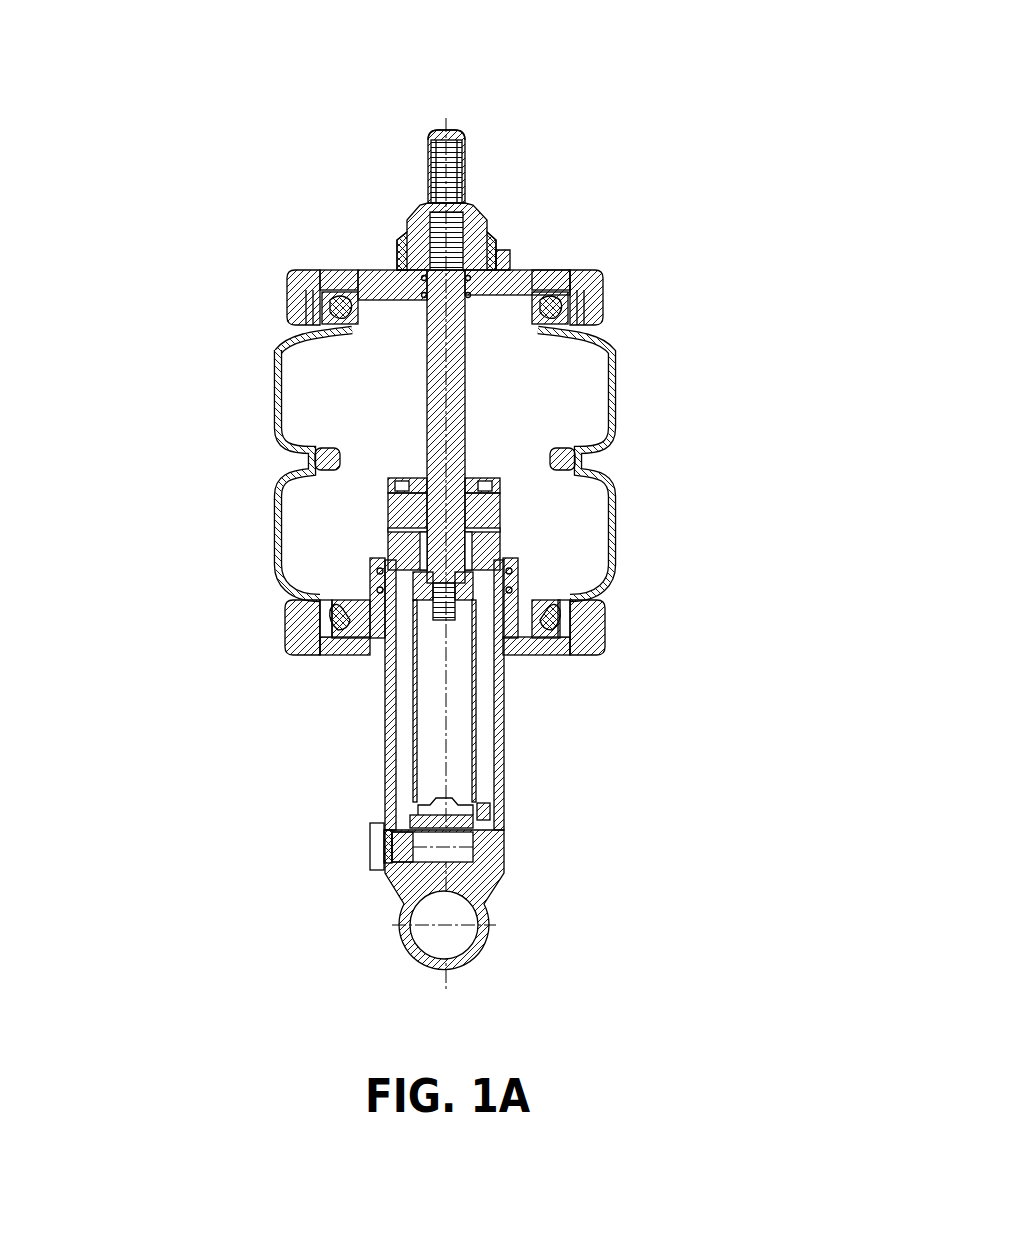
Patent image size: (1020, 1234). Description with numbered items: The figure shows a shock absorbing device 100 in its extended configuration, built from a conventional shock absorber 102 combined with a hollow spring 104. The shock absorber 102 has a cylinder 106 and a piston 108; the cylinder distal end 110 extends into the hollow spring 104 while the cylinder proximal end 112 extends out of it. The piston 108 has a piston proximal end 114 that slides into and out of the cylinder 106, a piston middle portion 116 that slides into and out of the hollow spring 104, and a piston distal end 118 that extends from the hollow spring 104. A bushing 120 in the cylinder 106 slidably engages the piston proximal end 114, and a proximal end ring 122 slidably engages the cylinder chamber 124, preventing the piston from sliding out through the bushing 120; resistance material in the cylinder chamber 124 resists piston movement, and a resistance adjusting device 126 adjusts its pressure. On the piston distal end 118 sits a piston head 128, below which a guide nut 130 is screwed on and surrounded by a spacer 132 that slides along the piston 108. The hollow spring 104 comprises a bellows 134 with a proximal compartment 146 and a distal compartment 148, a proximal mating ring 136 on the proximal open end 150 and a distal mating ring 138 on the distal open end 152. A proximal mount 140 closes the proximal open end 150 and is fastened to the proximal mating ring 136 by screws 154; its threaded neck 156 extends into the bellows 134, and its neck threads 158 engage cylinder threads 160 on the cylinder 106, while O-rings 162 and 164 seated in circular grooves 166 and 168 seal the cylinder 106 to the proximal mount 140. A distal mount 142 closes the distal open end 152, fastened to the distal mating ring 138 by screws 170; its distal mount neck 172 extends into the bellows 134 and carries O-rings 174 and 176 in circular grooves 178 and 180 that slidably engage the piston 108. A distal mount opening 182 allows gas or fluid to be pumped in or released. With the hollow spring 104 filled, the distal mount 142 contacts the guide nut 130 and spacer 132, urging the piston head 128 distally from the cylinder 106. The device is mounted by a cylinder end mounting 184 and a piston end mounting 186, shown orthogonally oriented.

The shock absorbing device 100 is at (528, 100).
The shock absorber 102 is at (498, 510).
The hollow spring 104 is at (617, 355).
The cylinder 106 is at (505, 752).
The piston 108 is at (603, 325).
The cylinder distal end 110 is at (480, 523).
The cylinder proximal end 112 is at (487, 815).
The piston proximal end 114 is at (440, 515).
The piston middle portion 116 is at (466, 425).
The piston distal end 118 is at (452, 230).
The bushing 120 is at (437, 507).
The proximal end ring 122 is at (380, 589).
The cylinder chamber 124 is at (415, 725).
The resistance adjusting device 126 is at (380, 850).
The piston head 128 is at (410, 223).
The guide nut 130 is at (368, 270).
The spacer 132 is at (494, 247).
The bellows 134 is at (272, 408).
The proximal mating ring 136 is at (287, 622).
The distal mating ring 138 is at (603, 296).
The proximal mount 140 is at (378, 437).
The distal mount 142 is at (288, 274).
The proximal compartment 146 is at (305, 495).
The distal compartment 148 is at (320, 388).
The proximal open end 150 is at (362, 613).
The distal open end 152 is at (513, 272).
The screws 154 is at (312, 640).
The threaded neck 156 is at (380, 558).
The neck threads 158 is at (523, 655).
The cylinder threads 160 is at (483, 643).
The O-ring 162 is at (307, 603).
The O-ring 164 is at (380, 573).
The circular groove 166 is at (508, 592).
The circular groove 168 is at (508, 568).
The screws 170 is at (312, 290).
The distal mount neck 172 is at (345, 322).
The O-ring 174 is at (330, 305).
The O-ring 176 is at (318, 287).
The circular groove 178 is at (578, 272).
The circular groove 180 is at (500, 240).
The distal mount opening 182 is at (397, 250).
The cylinder end mounting 184 is at (470, 900).
The piston end mounting 186 is at (428, 132).